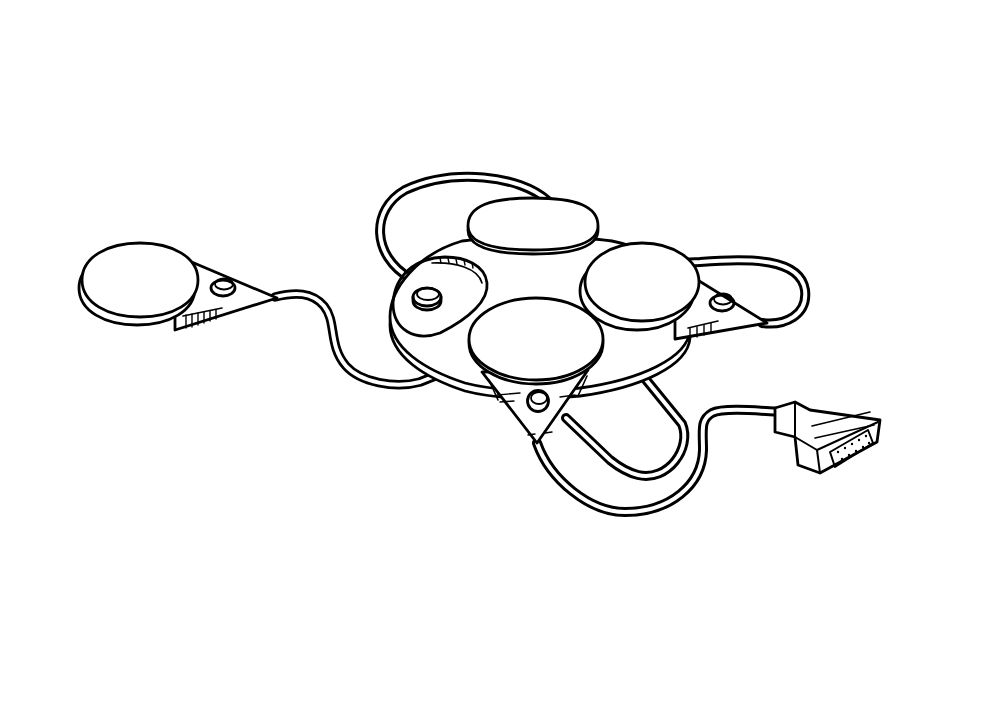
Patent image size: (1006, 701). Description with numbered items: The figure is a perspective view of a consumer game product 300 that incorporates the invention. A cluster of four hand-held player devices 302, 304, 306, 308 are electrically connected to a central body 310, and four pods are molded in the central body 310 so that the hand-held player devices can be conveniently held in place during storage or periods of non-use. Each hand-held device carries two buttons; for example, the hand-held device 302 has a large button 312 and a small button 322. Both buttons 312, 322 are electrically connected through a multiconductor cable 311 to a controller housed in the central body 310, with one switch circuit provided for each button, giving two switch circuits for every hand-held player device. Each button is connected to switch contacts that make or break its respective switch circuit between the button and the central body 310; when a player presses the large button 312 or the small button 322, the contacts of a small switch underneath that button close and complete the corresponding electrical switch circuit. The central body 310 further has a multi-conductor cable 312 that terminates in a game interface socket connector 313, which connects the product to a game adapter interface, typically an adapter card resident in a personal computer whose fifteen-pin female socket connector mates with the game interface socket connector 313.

The consumer game product 300 is at (657, 126).
The hand-held player device 302 is at (143, 231).
The hand-held player device 304 is at (562, 196).
The hand-held player device 306 is at (665, 241).
The hand-held player device 308 is at (507, 442).
The central body 310 is at (452, 389).
The multiconductor cable 311 is at (350, 378).
The large button 312 is at (117, 328).
The game interface socket connector 313 is at (843, 408).
The small button 322 is at (223, 294).